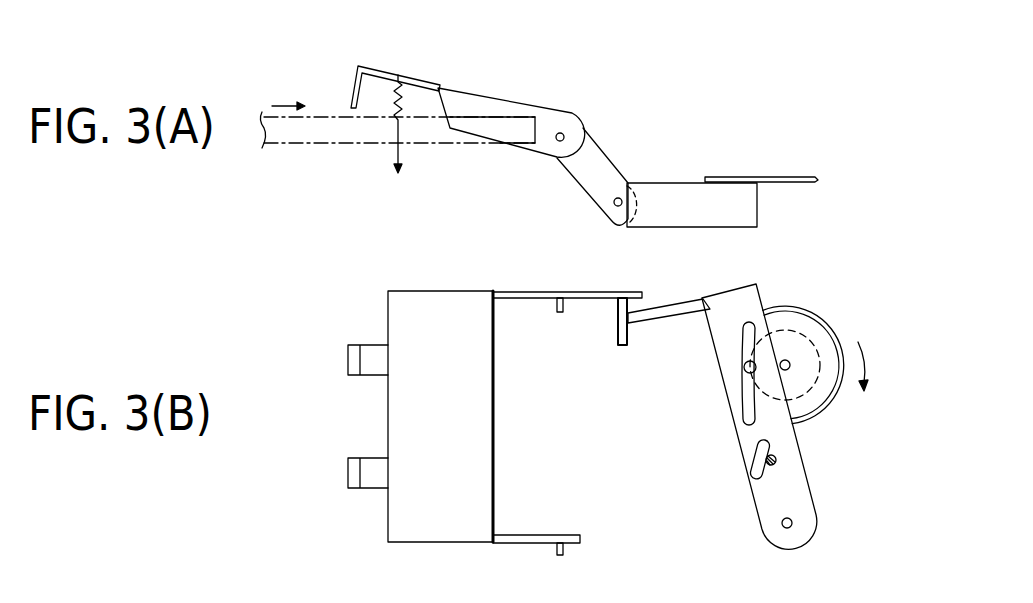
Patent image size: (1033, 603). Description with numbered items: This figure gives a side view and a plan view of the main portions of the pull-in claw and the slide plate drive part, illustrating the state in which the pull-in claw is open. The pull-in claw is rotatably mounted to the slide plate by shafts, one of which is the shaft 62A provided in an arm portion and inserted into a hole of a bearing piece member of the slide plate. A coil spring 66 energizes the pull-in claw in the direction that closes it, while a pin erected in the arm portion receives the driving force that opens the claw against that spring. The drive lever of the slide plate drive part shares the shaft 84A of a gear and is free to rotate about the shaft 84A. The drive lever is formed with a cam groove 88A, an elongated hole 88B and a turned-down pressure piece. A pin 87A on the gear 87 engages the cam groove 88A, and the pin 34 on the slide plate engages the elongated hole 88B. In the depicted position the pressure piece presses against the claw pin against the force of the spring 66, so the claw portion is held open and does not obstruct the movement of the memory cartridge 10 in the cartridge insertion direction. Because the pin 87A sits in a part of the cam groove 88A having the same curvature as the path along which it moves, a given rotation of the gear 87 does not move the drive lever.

The memory cartridge 10 is at (322, 116).
The coil spring 66 is at (393, 122).
The shaft 62A is at (560, 313).
The cam groove 88A is at (745, 424).
The elongated hole 88B is at (775, 478).
The gear 87 is at (837, 326).
The pin 87A is at (744, 372).
The pin 34 is at (779, 452).
The shaft 84A is at (793, 523).